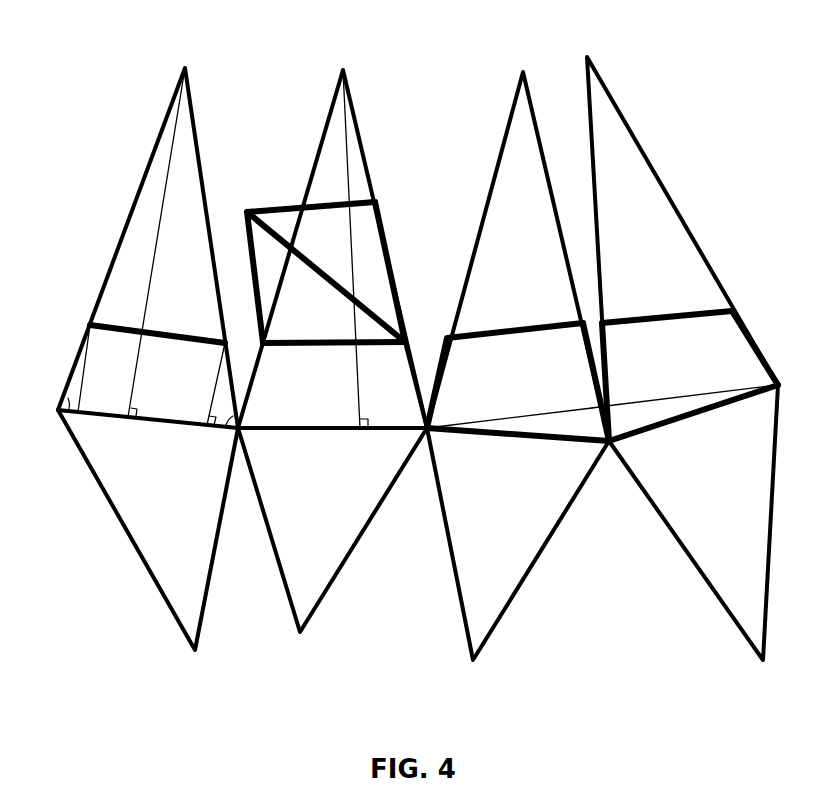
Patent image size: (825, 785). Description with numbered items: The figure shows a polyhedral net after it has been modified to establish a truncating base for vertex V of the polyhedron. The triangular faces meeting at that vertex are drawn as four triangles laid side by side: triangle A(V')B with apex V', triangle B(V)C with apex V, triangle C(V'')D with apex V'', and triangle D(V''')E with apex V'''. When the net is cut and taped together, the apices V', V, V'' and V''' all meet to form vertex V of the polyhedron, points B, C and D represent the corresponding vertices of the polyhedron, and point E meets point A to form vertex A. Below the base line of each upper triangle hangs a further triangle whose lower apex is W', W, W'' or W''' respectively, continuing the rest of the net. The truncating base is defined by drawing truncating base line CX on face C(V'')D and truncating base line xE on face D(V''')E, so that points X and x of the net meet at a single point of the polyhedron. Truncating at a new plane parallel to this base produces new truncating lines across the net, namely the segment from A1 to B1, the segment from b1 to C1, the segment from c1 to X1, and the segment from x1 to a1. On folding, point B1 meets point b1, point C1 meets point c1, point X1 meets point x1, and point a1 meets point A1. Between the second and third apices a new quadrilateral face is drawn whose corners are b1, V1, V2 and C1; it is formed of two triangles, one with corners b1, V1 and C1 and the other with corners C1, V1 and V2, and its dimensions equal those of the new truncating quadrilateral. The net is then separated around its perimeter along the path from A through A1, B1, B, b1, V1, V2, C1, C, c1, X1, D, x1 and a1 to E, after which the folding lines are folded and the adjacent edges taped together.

The apex V' is at (148, 227).
The vertex W prime W' is at (148, 550).
The point A1 is at (151, 368).
The point B1 is at (209, 384).
The point A is at (131, 423).
The point B is at (316, 441).
The apex V is at (332, 227).
The point V1 is at (316, 262).
The point V2 is at (391, 260).
The point b1 is at (334, 358).
The point C1 is at (401, 385).
The vertex W is at (332, 552).
The point C is at (497, 443).
The apex V'' is at (518, 233).
The point c1 is at (505, 375).
The point X1 is at (572, 382).
The vertex W double prime W'' is at (518, 559).
The point D is at (672, 426).
The apex V''' is at (682, 228).
The point x1 is at (667, 376).
The point a1 is at (739, 348).
The point X is at (509, 409).
The point x is at (610, 391).
The point E is at (706, 404).
The vertex W triple prime W''' is at (700, 537).